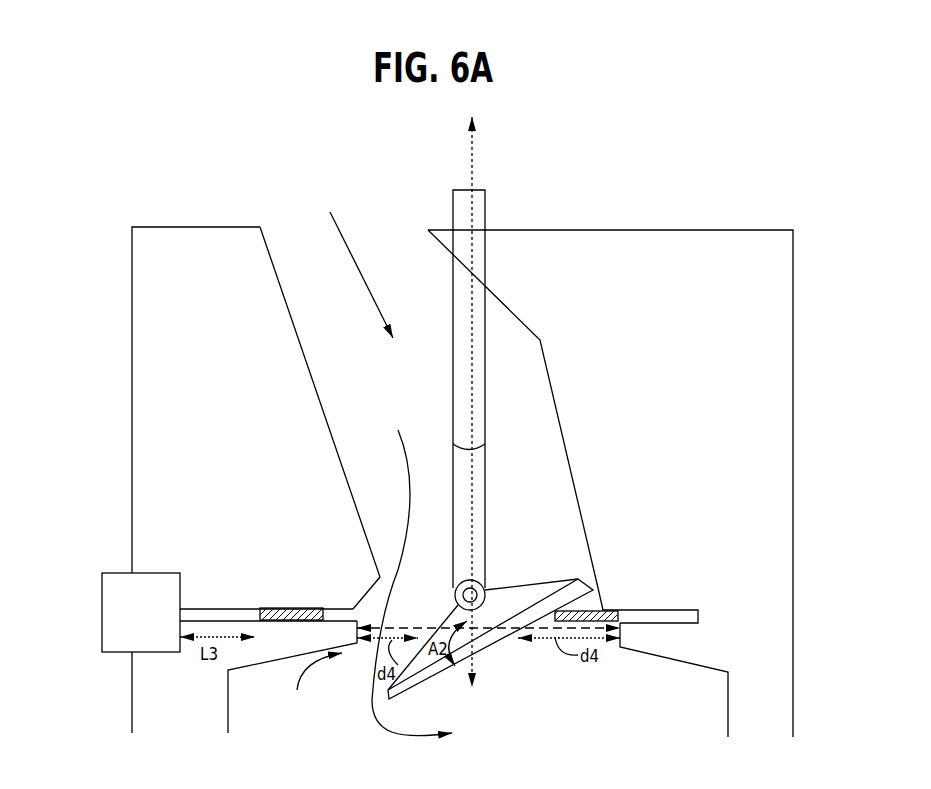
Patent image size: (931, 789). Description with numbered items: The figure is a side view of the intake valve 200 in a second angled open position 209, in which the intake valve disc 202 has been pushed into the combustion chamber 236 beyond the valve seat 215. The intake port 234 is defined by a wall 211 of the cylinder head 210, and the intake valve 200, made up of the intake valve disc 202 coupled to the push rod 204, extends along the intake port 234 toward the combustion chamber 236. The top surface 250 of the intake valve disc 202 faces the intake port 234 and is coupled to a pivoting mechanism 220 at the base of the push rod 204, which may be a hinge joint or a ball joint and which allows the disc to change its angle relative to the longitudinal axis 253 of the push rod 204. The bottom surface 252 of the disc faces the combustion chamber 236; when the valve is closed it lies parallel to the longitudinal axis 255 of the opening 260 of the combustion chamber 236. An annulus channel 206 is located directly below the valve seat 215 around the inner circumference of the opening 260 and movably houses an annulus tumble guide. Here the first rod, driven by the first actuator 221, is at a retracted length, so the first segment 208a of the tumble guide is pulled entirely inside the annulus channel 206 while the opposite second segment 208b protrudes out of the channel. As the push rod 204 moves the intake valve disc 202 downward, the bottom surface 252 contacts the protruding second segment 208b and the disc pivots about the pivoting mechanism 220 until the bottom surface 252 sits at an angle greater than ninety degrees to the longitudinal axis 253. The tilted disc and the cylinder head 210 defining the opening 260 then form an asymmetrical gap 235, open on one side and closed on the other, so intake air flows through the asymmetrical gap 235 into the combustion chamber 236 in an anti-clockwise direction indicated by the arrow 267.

The intake valve 200 is at (138, 145).
The second angled open position 209 is at (147, 182).
The cylinder head 210 is at (203, 292).
The wall 211 is at (282, 290).
The intake port 234 is at (366, 385).
The longitudinal axis of the push rod 253 is at (472, 178).
The push rod 204 is at (477, 218).
The first actuator 221 is at (115, 585).
The annulus channel 206 is at (340, 610).
The first segment of the annulus tumble guide 208a is at (293, 611).
The second segment of the annulus tumble guide 208b is at (605, 610).
The pivoting mechanism 220 is at (457, 584).
The longitudinal axis of the opening 255 is at (393, 618).
The top surface 250 is at (498, 588).
The intake valve disc 202 is at (541, 606).
The bottom surface 252 is at (590, 588).
The valve seat 215 is at (600, 600).
The opening 260 is at (312, 682).
The asymmetrical gap 235 is at (365, 647).
The arrow 267 is at (410, 738).
The combustion chamber 236 is at (532, 700).